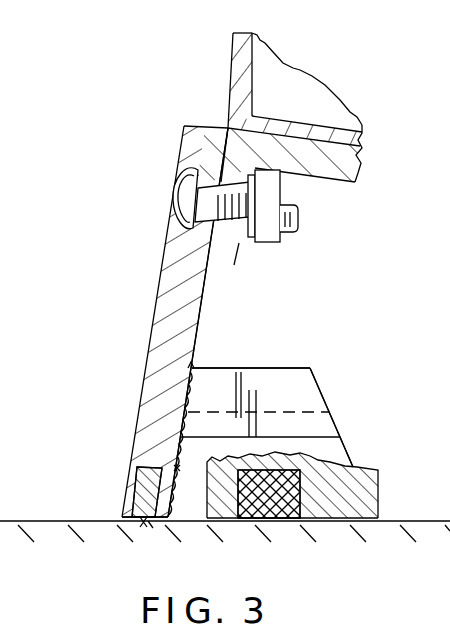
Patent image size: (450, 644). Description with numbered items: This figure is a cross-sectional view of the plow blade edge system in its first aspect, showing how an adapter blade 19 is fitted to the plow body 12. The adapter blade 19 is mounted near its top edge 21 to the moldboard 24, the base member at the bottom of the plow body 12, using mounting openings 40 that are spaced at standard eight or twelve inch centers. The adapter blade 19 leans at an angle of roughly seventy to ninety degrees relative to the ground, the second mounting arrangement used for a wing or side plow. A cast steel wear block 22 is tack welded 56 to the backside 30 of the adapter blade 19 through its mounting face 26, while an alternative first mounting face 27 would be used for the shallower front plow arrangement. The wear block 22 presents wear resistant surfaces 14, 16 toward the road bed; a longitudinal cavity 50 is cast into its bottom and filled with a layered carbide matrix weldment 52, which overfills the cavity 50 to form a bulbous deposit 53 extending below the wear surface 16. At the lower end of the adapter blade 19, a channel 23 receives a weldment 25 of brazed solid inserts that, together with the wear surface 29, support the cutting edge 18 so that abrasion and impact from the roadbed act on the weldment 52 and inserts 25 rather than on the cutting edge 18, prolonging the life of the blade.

The plow body 12 is at (230, 60).
The wear resistant surface 14 is at (138, 521).
The wear surface 16 is at (410, 535).
The cutting edge 18 is at (121, 517).
The adapter blade 19 is at (150, 300).
The top edge 21 is at (197, 125).
The wear block 22 is at (330, 395).
The channel 23 is at (152, 470).
The moldboard 24 is at (320, 166).
The weldment 25 is at (134, 523).
The mounting face 26 is at (160, 368).
The first mounting face 27 is at (318, 378).
The wear surface 29 is at (142, 526).
The backside 30 is at (200, 313).
The mounting opening 40 is at (170, 193).
The cavity 50 is at (333, 523).
The carbide matrix weldment 52 is at (299, 485).
The bulbous deposit 53 is at (270, 527).
The weld 56 is at (193, 365).